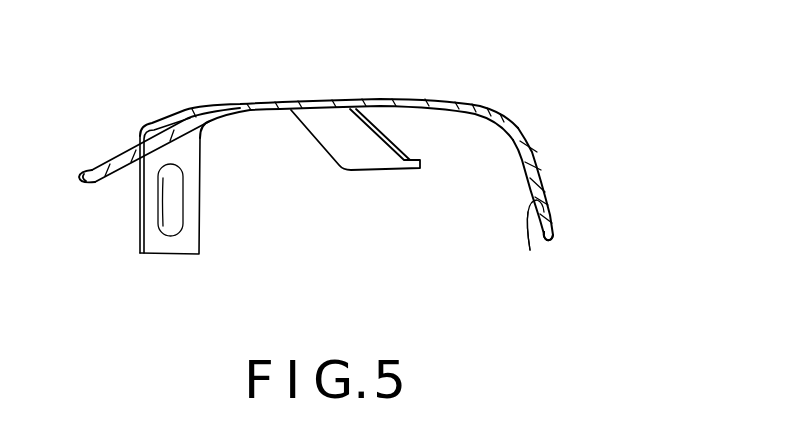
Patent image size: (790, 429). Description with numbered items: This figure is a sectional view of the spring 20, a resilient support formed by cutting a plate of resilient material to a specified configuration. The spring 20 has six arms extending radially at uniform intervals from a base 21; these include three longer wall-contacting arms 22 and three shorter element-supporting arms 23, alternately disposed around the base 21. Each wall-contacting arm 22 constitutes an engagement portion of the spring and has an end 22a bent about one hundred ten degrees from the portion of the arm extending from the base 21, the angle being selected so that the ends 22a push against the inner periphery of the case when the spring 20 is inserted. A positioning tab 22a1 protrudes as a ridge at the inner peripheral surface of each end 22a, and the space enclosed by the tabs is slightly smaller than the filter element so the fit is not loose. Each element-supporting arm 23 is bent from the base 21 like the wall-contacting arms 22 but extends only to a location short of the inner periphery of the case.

The spring 20 is at (309, 192).
The base 21 is at (308, 100).
The wall-contacting arm 22 is at (128, 226).
The end 22a is at (555, 234).
The positioning tab 22a1 is at (530, 250).
The element-supporting arm 23 is at (120, 156).